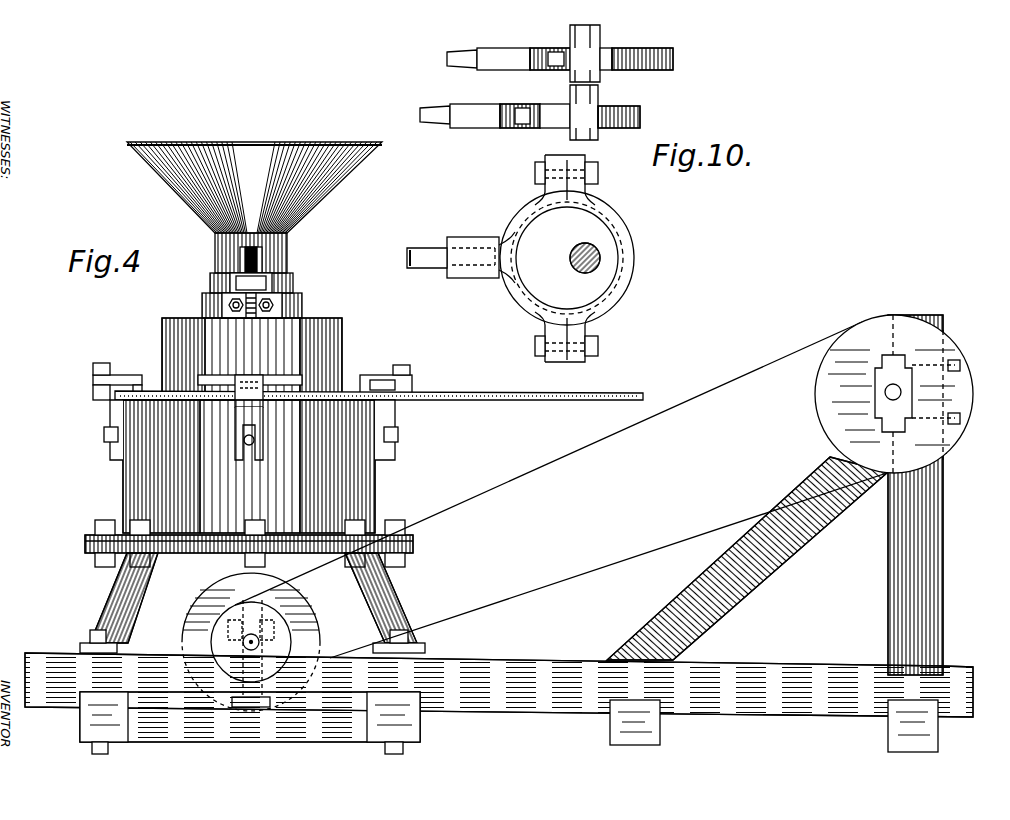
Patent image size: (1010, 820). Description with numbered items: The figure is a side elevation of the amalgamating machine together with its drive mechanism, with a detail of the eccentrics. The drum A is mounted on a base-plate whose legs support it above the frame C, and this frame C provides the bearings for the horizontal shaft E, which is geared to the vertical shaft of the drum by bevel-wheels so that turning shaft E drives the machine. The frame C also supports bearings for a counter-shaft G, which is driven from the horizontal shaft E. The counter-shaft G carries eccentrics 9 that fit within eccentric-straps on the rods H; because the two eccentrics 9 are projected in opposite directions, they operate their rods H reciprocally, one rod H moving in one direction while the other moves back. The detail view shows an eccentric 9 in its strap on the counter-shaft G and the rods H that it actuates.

In FIG. 4, the drum A is at (282, 484).
In FIG. 4, the frame C is at (499, 674).
In FIG. 4, the horizontal shaft E is at (300, 620).
In FIG. 4, the counter-shaft G is at (885, 392).
In FIG. 10, the counter-shaft G is at (584, 273).
In FIG. 4, the rods H is at (379, 385).
In FIG. 10, the rods H is at (465, 52).
In FIG. 10, the eccentric 9 is at (608, 48).